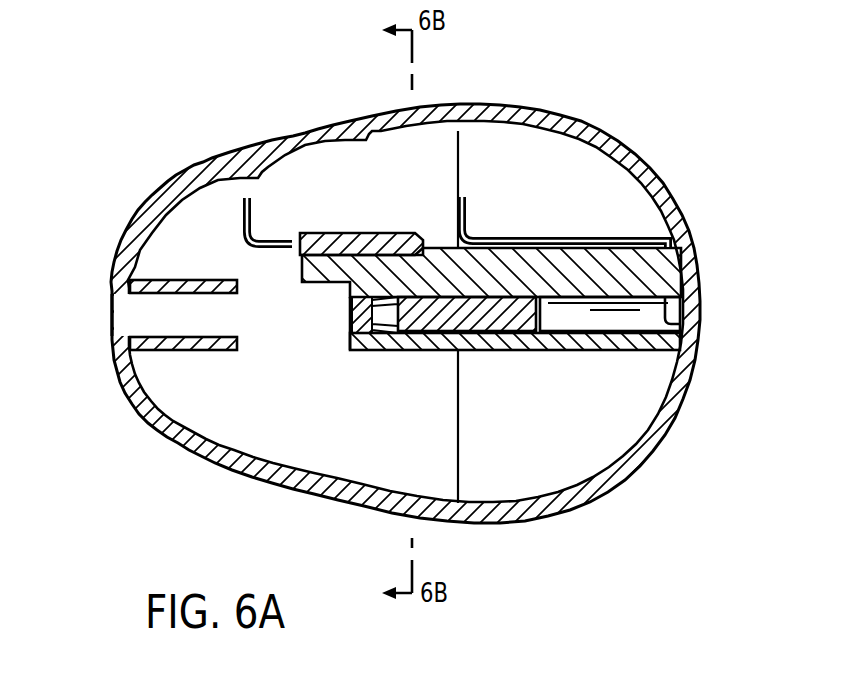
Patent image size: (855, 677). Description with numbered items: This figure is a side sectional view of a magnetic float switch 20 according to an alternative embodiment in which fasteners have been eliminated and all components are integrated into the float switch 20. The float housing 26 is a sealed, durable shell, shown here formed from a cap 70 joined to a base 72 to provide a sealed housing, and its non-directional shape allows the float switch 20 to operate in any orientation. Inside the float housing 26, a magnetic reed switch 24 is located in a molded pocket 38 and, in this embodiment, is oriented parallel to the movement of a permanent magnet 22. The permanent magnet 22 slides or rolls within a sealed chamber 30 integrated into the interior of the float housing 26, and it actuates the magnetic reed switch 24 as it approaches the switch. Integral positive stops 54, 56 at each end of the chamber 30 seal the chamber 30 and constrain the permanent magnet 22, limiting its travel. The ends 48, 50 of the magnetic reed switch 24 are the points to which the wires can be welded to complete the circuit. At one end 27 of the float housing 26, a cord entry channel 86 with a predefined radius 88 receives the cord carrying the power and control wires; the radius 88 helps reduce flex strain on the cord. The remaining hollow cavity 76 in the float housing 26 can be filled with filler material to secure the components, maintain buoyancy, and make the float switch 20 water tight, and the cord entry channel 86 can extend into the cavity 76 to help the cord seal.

The float switch 20 is at (711, 167).
The permanent magnet 22 is at (440, 315).
The magnetic reed switch 24 is at (343, 243).
The float housing 26 is at (423, 103).
The end 27 is at (142, 418).
The chamber 30 is at (590, 317).
The molded pocket 38 is at (300, 264).
The end of magnetic reed switch 48 is at (242, 214).
The end of magnetic reed switch 50 is at (467, 207).
The positive stop 54 is at (345, 318).
The positive stop 56 is at (667, 303).
The cap 70 is at (637, 163).
The base 72 is at (330, 123).
The hollow cavity 76 is at (608, 442).
The cord entry channel 86 is at (138, 312).
The predefined radius 88 is at (110, 333).